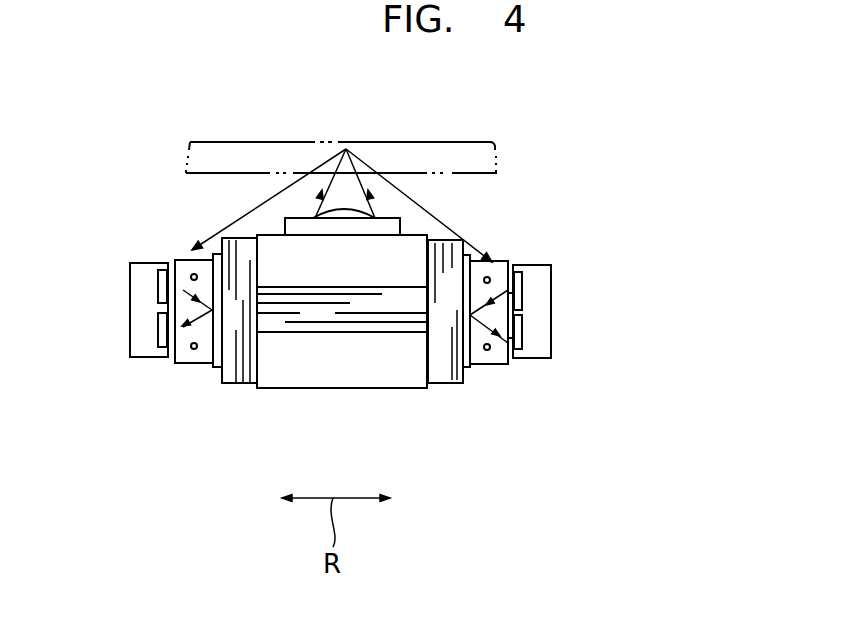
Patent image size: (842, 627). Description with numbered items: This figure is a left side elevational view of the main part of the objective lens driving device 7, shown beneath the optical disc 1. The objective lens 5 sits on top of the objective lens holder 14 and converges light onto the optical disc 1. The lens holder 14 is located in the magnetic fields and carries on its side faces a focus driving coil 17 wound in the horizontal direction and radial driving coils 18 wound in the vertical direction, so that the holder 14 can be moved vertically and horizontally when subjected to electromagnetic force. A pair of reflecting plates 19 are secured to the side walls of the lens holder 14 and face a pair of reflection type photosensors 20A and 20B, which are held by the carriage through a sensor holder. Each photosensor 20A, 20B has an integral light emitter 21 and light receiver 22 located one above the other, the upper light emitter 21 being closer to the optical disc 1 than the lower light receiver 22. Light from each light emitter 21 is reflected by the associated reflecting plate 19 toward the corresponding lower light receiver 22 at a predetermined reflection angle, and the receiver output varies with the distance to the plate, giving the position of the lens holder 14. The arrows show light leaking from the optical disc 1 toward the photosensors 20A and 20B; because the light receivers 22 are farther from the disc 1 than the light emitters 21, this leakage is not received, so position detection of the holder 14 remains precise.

The objective lens driving device 7 is at (140, 155).
The optical disc 1 is at (433, 155).
The objective lens 5 is at (392, 230).
The objective lens holder 14 is at (375, 373).
The focus driving coil 17 is at (310, 312).
The radial driving coils 18 is at (236, 375).
The reflecting plates 19 is at (208, 352).
The reflection type photosensor 20A is at (553, 300).
The reflection type photosensor 20B is at (143, 262).
The light emitter 21 is at (172, 283).
The light receiver 22 is at (163, 328).